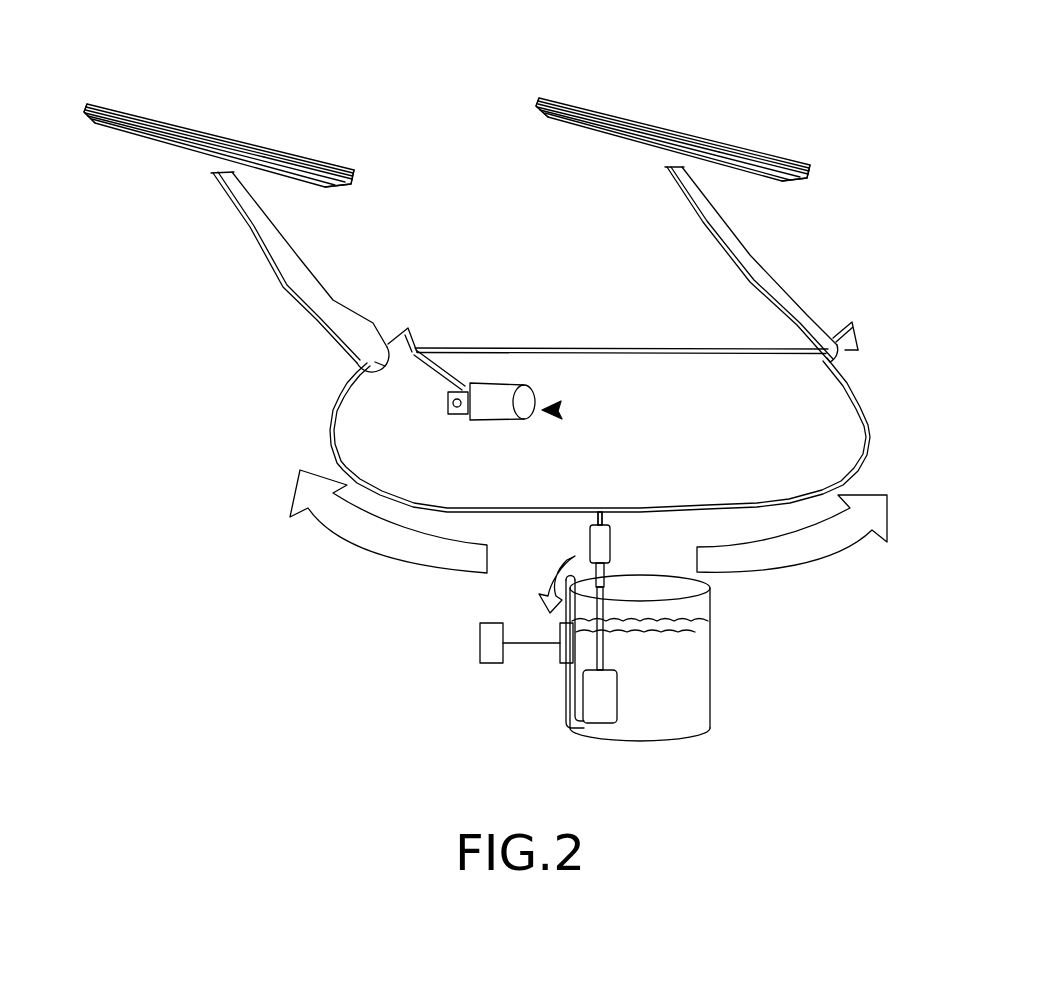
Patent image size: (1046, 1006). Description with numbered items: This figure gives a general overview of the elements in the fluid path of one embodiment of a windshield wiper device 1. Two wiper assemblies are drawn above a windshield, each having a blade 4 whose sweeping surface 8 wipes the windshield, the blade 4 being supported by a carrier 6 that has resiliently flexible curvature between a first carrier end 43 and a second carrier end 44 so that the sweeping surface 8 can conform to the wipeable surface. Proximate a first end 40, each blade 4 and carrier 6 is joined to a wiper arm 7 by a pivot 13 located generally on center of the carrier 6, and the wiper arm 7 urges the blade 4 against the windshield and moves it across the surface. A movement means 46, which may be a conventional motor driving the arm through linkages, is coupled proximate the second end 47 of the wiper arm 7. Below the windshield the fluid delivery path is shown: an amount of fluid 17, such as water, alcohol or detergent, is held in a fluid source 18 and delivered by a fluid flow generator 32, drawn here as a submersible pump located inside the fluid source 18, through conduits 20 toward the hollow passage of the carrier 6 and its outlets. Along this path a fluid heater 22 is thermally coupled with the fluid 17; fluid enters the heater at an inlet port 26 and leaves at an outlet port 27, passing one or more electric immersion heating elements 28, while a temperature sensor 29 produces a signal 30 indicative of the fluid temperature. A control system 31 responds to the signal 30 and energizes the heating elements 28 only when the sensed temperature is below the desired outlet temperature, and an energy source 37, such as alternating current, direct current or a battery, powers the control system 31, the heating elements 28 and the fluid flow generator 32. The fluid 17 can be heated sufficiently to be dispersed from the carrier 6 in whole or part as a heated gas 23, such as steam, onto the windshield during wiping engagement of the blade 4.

The vehicle 1 is at (886, 28).
The blade 4 is at (433, 159).
The sweeping surface 8 is at (290, 150).
The carrier 6 is at (447, 159).
The second carrier end 44 is at (92, 104).
The first carrier end 43 is at (354, 185).
The pivot 13 is at (212, 173).
The first end 40 is at (222, 192).
The wiper arm 7 is at (363, 322).
The second end 47 is at (380, 366).
The conduits 20 is at (870, 416).
The movement means 46 is at (558, 412).
The fluid 17 is at (588, 622).
The heated gas 23 is at (588, 521).
The fluid source 18 is at (710, 706).
The fluid heater 22 is at (642, 549).
The heating element 28 is at (642, 549).
The temperature sensor 29 is at (642, 549).
The outlet port 27 is at (597, 520).
The inlet port 26 is at (605, 572).
The fluid flow generator 32 is at (608, 716).
The control system 31 is at (563, 664).
The energy source 37 is at (491, 664).
The signal 30 is at (555, 573).